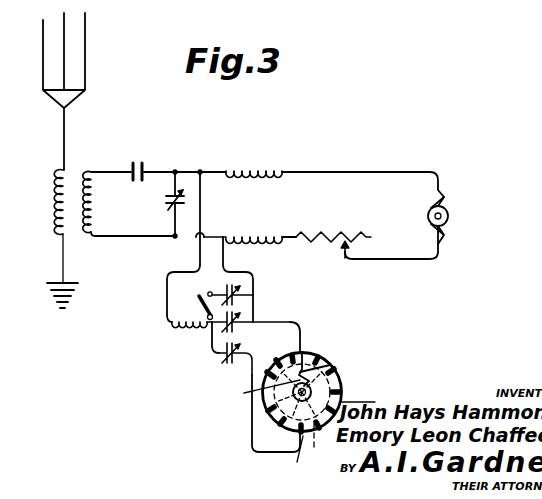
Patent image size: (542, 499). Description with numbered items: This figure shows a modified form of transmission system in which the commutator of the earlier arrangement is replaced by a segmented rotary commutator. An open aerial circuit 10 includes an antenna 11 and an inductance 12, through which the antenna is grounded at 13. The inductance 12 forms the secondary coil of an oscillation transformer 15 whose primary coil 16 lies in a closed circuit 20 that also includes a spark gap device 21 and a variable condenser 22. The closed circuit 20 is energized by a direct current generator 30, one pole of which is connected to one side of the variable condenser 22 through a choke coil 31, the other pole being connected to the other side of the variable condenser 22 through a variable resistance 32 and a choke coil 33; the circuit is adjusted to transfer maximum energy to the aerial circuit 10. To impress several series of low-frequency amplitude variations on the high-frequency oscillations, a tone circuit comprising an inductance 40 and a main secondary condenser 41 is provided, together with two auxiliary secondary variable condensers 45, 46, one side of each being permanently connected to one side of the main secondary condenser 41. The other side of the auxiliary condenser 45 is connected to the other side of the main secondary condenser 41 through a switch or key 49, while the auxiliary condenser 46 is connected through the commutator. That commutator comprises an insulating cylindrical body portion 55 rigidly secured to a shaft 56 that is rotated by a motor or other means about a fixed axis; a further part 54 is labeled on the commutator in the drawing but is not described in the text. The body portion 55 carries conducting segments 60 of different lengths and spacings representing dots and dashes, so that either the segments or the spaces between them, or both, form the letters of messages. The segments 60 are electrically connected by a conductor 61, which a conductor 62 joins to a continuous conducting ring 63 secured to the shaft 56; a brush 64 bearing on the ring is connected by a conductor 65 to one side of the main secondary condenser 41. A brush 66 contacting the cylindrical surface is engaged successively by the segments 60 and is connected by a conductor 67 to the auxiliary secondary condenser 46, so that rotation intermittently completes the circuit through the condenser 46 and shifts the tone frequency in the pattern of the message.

The open aerial circuit 10 is at (34, 176).
The antenna 11 is at (62, 129).
The inductance 12 is at (58, 204).
The ground 13 is at (50, 289).
The oscillation transformer 15 is at (80, 164).
The primary coil 16 is at (96, 188).
The closed circuit 20 is at (170, 217).
The spark gap device 21 is at (140, 163).
The variable condenser 22 is at (172, 199).
The direct current generator 30 is at (448, 217).
The choke coil 31 is at (251, 168).
The variable resistance 32 is at (338, 236).
The choke coil 33 is at (252, 236).
The inductance 40 is at (187, 306).
The main secondary condenser 41 is at (236, 318).
The auxiliary secondary variable condenser 45 is at (236, 284).
The auxiliary secondary variable condenser 46 is at (225, 362).
The switch or key 49 is at (203, 302).
The rotating arm 54 is at (342, 381).
The cylindrical body portion 55 is at (312, 373).
The shaft 56 is at (312, 393).
The conducting segments 60 is at (289, 360).
The conductor 61 is at (302, 402).
The conductor 62 is at (319, 448).
The continuous conducting ring 63 is at (375, 402).
The brush 64 is at (264, 388).
The conductor 65 is at (292, 323).
The brush 66 is at (296, 458).
The conductor 67 is at (251, 403).